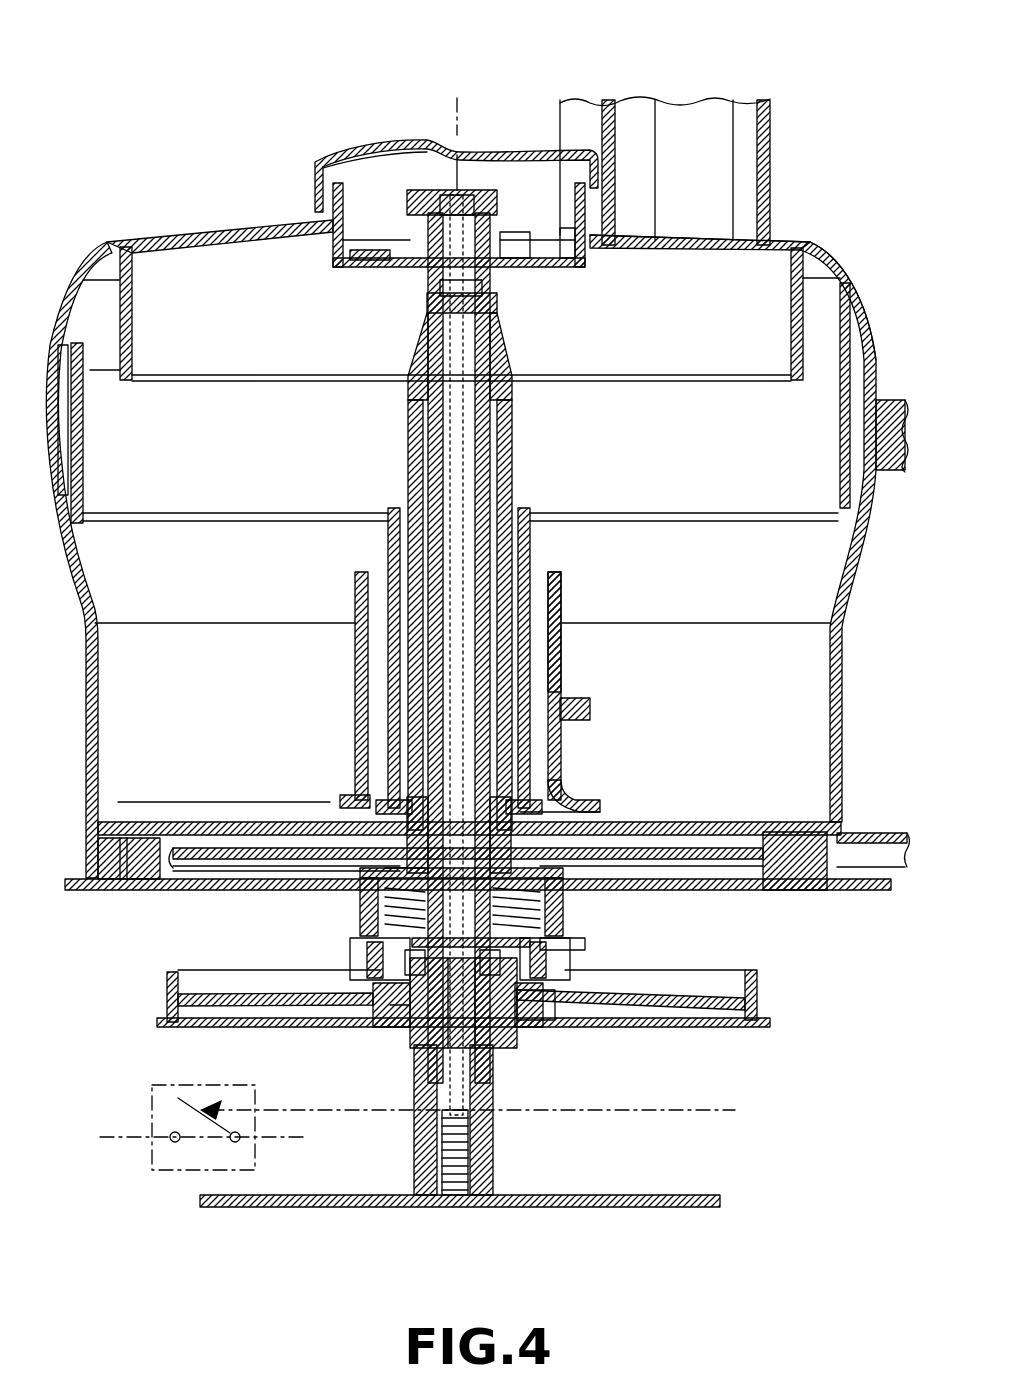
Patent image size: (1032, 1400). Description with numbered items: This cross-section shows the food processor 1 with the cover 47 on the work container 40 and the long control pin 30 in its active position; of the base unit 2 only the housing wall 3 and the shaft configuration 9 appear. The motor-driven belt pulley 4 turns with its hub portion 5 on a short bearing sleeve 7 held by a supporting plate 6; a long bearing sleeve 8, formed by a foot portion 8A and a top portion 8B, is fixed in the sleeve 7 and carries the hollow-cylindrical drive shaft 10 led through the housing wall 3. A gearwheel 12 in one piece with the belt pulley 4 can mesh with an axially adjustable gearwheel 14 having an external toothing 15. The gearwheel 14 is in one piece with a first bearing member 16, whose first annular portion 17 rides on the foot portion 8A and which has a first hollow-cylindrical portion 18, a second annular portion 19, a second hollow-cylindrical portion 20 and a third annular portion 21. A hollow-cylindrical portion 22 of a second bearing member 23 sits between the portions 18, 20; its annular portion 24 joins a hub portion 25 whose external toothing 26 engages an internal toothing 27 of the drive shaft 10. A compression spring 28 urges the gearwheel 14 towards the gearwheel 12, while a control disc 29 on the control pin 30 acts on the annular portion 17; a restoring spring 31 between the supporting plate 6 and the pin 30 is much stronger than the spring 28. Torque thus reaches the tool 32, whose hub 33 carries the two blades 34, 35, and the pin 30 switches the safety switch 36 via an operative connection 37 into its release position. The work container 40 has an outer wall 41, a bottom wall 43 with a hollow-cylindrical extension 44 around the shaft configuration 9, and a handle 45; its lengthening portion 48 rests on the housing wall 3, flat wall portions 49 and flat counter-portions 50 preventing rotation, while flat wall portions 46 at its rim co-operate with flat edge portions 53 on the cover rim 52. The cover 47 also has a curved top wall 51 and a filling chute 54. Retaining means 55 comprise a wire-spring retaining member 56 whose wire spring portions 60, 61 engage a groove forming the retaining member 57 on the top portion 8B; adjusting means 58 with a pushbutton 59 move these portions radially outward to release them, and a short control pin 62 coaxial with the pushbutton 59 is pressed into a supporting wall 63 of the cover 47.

The food processor 1 is at (228, 112).
The base unit 2 is at (722, 1155).
The housing wall 3 is at (840, 892).
The belt pulley 4 is at (168, 996).
The hub portion 5 is at (410, 1050).
The supporting plate 6 is at (225, 1208).
The short bearing sleeve 7 is at (492, 1125).
The long bearing sleeve 8 is at (512, 360).
The foot portion 8A is at (480, 320).
The top portion 8B is at (436, 290).
The shaft configuration 9 is at (398, 436).
The drive shaft 10 is at (510, 428).
The gearwheel 12 is at (380, 1020).
The axially adjustable gearwheel 14 is at (395, 1040).
The external toothing 15 is at (525, 1020).
The first bearing member 16 is at (580, 975).
The first annular portion 17 is at (562, 892).
The first hollow-cylindrical portion 18 is at (365, 956).
The second annular portion 19 is at (350, 975).
The second hollow-cylindrical portion 20 is at (350, 942).
The third annular portion 21 is at (340, 922).
The hollow-cylindrical portion 22 is at (575, 946).
The second bearing member 23 is at (622, 842).
The annular portion 24 is at (575, 878).
The hub portion 25 is at (540, 775).
The external toothing 26 is at (355, 790).
The internal toothing 27 is at (560, 812).
The compression spring 28 is at (350, 878).
The control disc 29 is at (545, 955).
The long control pin 30 is at (462, 455).
The restoring spring 31 is at (458, 1208).
The tool 32 is at (350, 590).
The hub 33 is at (561, 582).
The bar 34 is at (178, 800).
The blade 35 is at (590, 712).
The safety switch 36 is at (262, 1165).
The operative connection 37 is at (362, 1112).
The work container 40 is at (846, 640).
The outer wall 41 is at (86, 668).
The bottom wall 43 is at (735, 822).
The hollow-cylindrical extension 44 is at (390, 546).
The handle 45 is at (878, 470).
The wall portions 46 is at (85, 412).
The cover 47 is at (792, 225).
The lengthening portion 48 is at (98, 860).
The flat wall portions 49 is at (840, 845).
The flat counter-portions 50 is at (805, 860).
The top wall 51 is at (228, 232).
The cover rim 52 is at (856, 322).
The flat edge portions 53 is at (84, 452).
The filling chute 54 is at (750, 135).
The retaining means 55 is at (502, 270).
The retaining member 56 is at (585, 248).
The retaining member 57 is at (480, 228).
The adjusting means 58 is at (332, 138).
The pushbutton 59 is at (420, 148).
The wire spring portion 60 is at (408, 258).
The wire spring portion 61 is at (500, 246).
The short control pin 62 is at (450, 225).
The supporting wall 63 is at (453, 190).